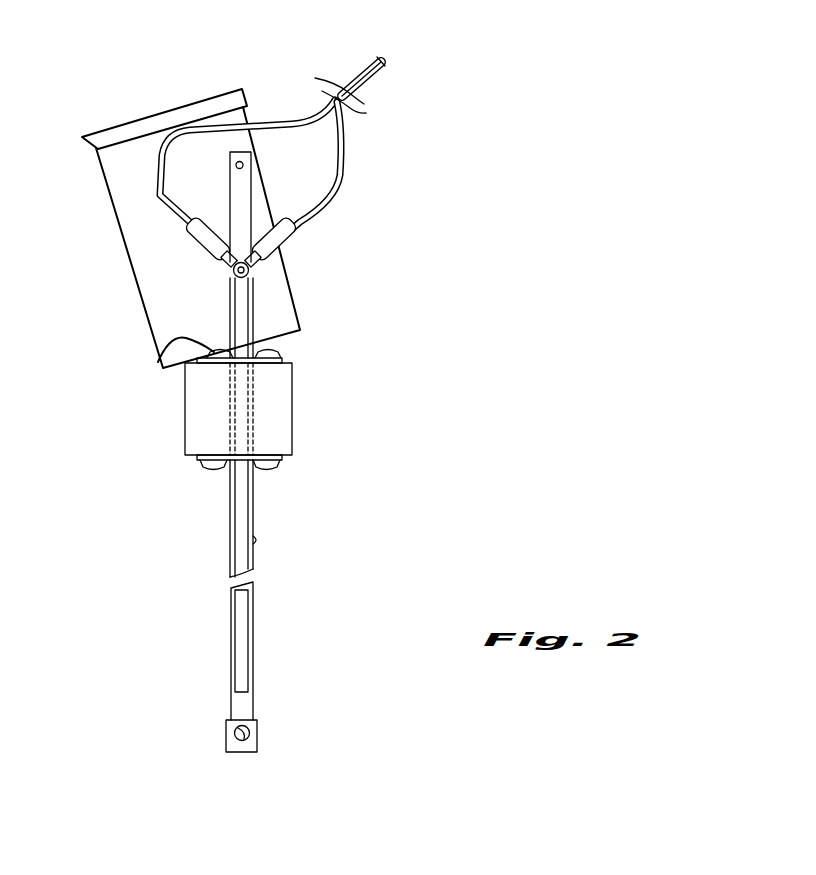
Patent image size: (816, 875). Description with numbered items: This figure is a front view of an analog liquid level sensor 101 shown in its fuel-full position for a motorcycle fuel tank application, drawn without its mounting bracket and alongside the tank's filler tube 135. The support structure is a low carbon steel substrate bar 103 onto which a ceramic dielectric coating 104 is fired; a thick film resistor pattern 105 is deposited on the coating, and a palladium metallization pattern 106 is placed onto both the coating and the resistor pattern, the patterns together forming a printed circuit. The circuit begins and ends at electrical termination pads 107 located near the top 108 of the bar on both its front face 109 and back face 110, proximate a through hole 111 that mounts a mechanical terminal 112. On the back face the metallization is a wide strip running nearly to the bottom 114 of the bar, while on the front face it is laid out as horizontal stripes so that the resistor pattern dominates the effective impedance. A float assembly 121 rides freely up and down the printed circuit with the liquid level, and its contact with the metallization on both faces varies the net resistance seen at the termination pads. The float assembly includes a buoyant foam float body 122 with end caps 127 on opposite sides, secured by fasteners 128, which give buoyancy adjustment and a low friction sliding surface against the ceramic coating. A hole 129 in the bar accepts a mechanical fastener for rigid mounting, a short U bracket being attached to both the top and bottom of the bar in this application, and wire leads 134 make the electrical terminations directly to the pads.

The analog liquid level sensor 101 is at (360, 188).
The low carbon steel substrate bar 103 is at (253, 512).
The ceramic dielectric coating 104 is at (242, 181).
The thick film resistor pattern 105 is at (240, 562).
The palladium metallization pattern 106 is at (240, 627).
The electrical termination pad 107 is at (244, 281).
The top of the bar 108 is at (249, 150).
The front face of the bar 109 is at (252, 600).
The back face of the bar 110 is at (250, 540).
The through hole 111 is at (232, 266).
The mechanical terminal 112 is at (252, 269).
The bottom of the bar 114 is at (240, 755).
The float assembly 121 is at (290, 407).
The float body 122 is at (277, 438).
The end cap 127 is at (200, 472).
The fastener 128 is at (213, 354).
The hole in the bar 129 is at (246, 167).
The wire lead 134 is at (347, 72).
The filler tube 135 is at (137, 228).